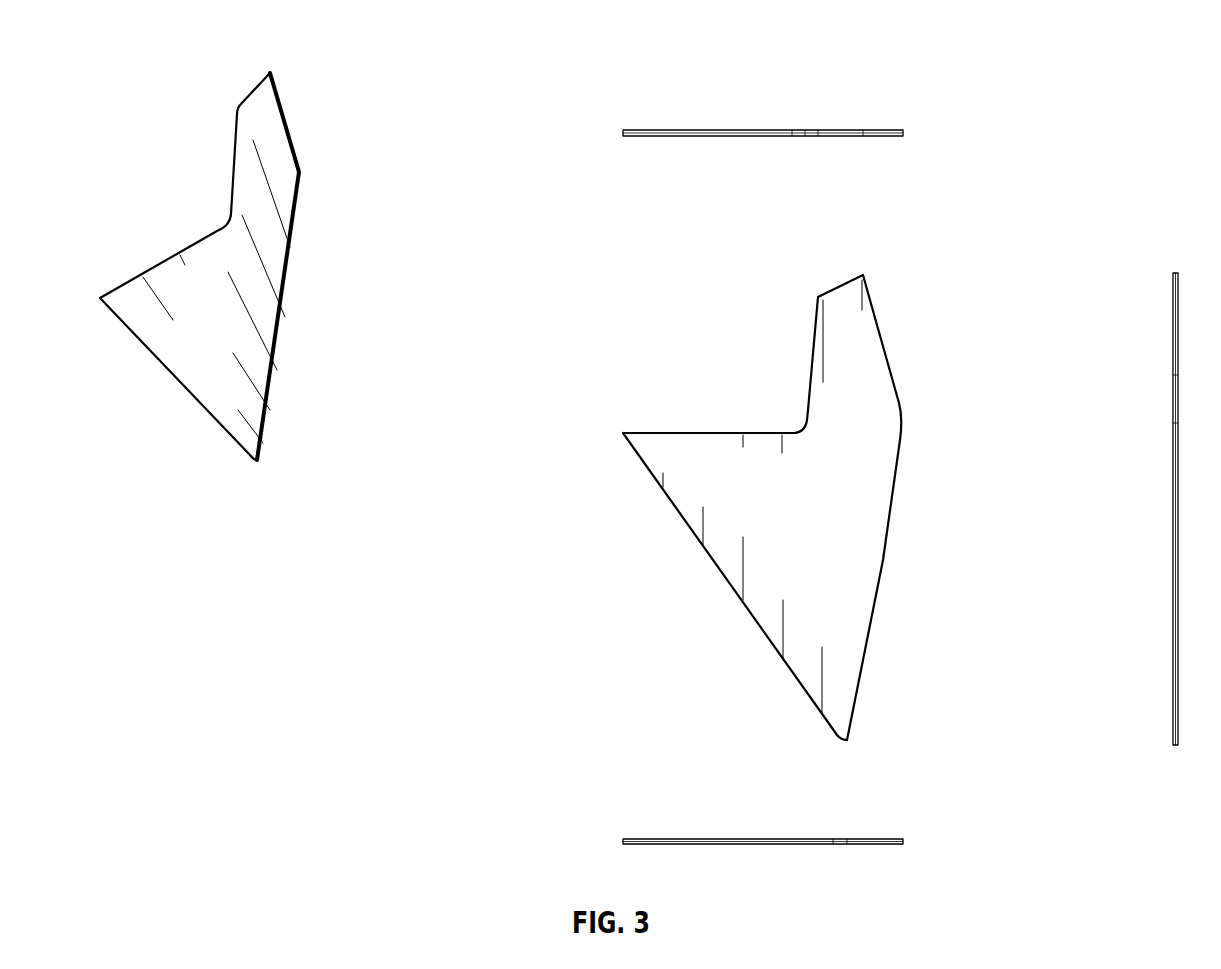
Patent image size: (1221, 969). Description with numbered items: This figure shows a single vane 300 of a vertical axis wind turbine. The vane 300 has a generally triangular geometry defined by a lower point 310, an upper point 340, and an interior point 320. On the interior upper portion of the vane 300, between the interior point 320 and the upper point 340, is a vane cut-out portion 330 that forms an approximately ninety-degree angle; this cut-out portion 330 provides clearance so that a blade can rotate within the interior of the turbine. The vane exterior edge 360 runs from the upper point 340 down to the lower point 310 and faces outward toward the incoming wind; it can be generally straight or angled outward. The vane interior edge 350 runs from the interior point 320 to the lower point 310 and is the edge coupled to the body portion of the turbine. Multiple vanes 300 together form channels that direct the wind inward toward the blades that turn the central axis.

The vane 300 is at (135, 56).
The lower point 310 is at (844, 747).
The interior point 320 is at (623, 433).
The vane cut-out portion 330 is at (760, 531).
The upper point 340 is at (863, 275).
The vane interior edge 350 is at (728, 587).
The vane exterior edge 360 is at (900, 468).